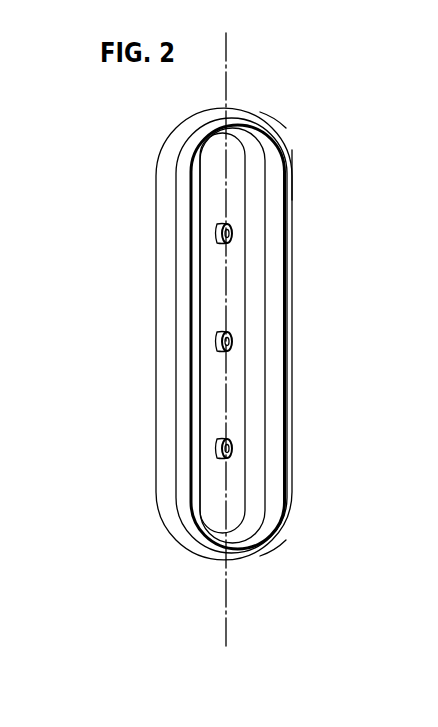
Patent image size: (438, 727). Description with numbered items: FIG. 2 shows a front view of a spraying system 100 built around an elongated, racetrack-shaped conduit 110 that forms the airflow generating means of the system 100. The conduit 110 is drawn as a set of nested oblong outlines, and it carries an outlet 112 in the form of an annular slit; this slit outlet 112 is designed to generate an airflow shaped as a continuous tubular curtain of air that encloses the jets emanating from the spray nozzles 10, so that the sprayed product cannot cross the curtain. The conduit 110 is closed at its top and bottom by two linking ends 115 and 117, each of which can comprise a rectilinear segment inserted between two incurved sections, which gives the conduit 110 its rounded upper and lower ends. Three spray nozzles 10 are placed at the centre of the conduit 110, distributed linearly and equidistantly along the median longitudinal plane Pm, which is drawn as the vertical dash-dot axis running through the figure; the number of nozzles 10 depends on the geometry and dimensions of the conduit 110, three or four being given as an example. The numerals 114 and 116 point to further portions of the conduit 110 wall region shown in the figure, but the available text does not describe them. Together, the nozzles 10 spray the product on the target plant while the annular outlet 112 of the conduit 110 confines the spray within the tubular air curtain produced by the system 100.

The spray nozzle 10 is at (241, 232).
The system 100 is at (178, 323).
The conduit 110 is at (289, 177).
The outlet 112 is at (282, 258).
The outer wall 114 is at (182, 393).
The linking end 115 is at (286, 101).
The inner opening 116 is at (288, 340).
The linking end 117 is at (288, 563).
The median longitudinal plane Pm is at (228, 50).